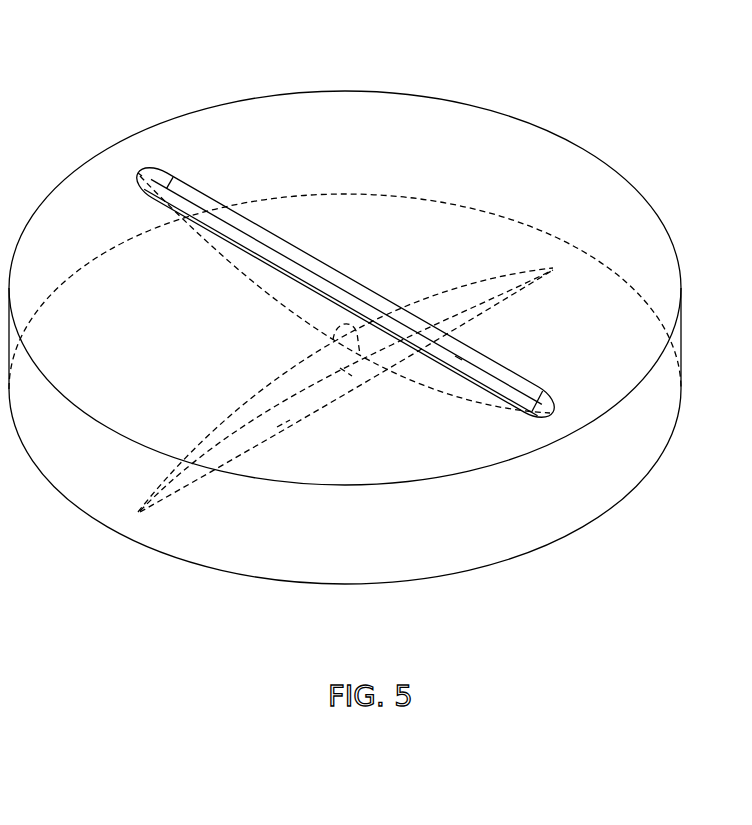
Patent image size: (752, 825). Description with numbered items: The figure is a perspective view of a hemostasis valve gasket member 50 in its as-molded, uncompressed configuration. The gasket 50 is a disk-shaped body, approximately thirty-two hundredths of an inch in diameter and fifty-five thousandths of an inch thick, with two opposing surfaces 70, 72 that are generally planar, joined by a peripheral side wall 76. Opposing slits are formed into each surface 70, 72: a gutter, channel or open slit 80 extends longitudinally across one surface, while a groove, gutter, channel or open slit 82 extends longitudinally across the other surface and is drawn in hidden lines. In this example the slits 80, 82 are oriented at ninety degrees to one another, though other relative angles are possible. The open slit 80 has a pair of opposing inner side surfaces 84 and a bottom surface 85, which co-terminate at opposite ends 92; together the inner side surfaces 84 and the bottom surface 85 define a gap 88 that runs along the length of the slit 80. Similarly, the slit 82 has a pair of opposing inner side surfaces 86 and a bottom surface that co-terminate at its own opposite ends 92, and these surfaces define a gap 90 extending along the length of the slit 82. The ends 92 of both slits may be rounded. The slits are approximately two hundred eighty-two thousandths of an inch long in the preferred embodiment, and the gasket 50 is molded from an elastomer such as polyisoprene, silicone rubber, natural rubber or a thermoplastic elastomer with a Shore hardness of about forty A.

The hemostasis valve gasket member 50 is at (105, 86).
The surface 70 is at (628, 320).
The surface 72 is at (610, 200).
The side surface 76 is at (567, 493).
The slit 80 is at (293, 243).
The slit 82 is at (213, 471).
The inner side surface 84 is at (363, 293).
The bottom surface 85 is at (322, 279).
The inner side surface 86 is at (277, 427).
The gap 88 is at (459, 357).
The gap 90 is at (350, 376).
The ends 92 is at (139, 172).